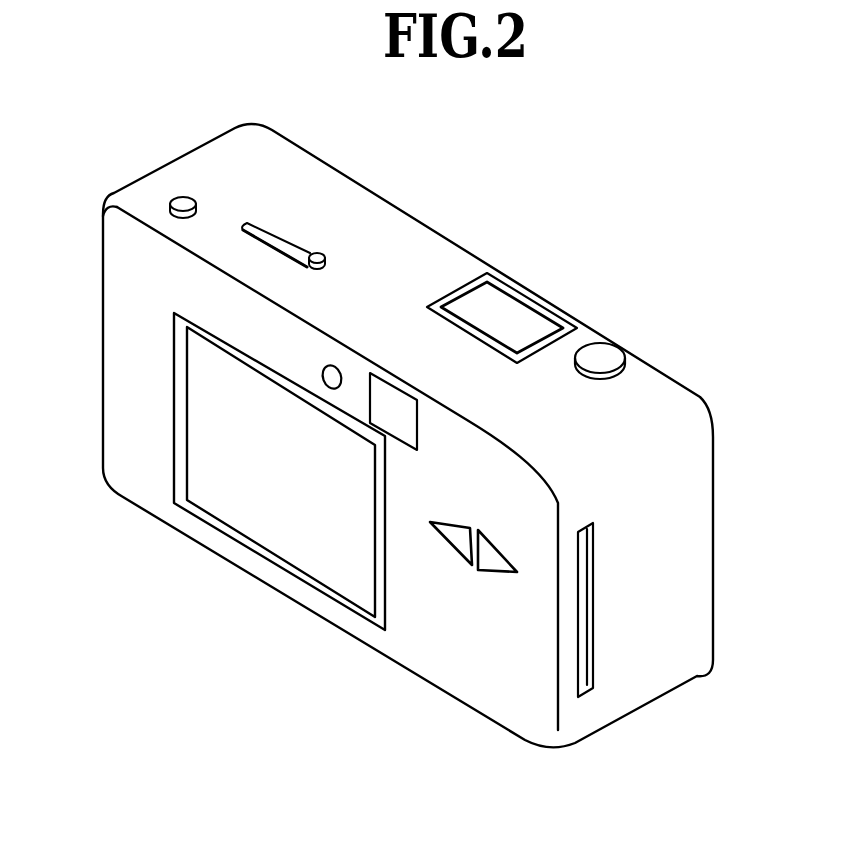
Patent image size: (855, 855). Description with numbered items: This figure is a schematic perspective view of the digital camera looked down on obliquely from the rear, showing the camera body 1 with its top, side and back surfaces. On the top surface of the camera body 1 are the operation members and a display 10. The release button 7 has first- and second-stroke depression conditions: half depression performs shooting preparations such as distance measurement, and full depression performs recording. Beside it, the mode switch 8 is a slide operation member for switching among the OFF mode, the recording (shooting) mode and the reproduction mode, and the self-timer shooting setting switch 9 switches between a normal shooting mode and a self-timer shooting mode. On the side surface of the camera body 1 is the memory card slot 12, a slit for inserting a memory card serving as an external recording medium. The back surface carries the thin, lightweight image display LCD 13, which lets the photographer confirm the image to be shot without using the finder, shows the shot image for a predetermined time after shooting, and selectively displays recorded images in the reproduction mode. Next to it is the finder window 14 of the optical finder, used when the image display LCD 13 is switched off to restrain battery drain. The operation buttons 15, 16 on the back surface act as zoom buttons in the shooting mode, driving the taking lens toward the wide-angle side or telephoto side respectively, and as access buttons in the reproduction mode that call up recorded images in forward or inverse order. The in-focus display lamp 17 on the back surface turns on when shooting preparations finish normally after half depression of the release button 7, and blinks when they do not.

The camera body 1 is at (452, 240).
The release button 7 is at (603, 353).
The mode switch 8 is at (317, 252).
The self-timer shooting setting switch 9 is at (182, 198).
The display 10 is at (503, 310).
The memory card slot 12 is at (587, 593).
The image display LCD 13 is at (270, 530).
The finder window 14 is at (398, 413).
The operation button 15 is at (457, 537).
The operation button 16 is at (488, 560).
The in-focus display lamp 17 is at (323, 372).